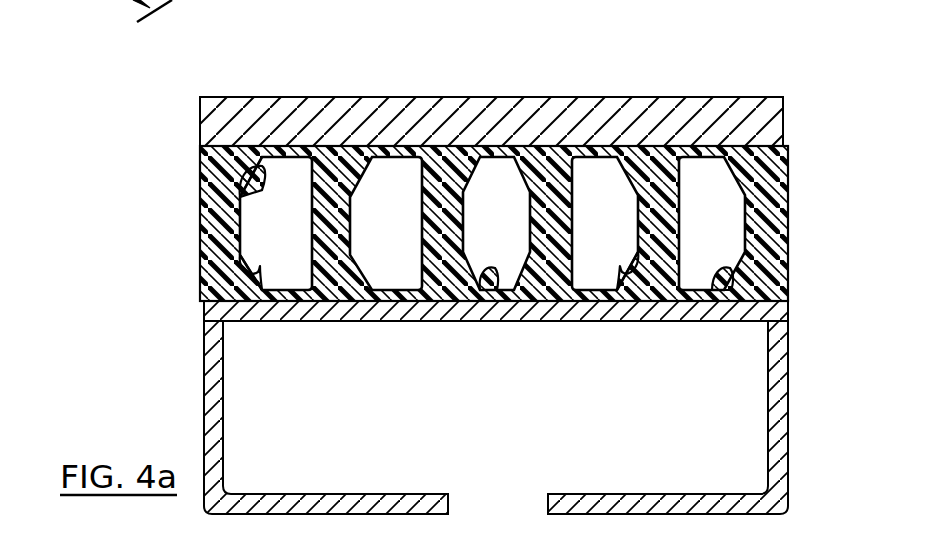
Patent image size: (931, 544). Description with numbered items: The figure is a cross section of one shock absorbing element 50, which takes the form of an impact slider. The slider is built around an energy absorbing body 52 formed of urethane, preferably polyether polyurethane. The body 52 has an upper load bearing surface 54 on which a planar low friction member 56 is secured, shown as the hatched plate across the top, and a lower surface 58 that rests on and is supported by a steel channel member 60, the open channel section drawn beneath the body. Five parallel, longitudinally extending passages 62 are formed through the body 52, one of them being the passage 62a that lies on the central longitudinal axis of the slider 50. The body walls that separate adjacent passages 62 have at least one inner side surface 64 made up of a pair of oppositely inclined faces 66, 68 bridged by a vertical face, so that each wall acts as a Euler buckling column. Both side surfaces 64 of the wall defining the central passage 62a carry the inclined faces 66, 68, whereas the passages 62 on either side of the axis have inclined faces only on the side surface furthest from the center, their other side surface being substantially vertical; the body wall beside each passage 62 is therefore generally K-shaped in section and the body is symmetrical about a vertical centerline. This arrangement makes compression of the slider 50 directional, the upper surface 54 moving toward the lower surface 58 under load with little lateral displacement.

The shock absorbing element 50 is at (372, 33).
The energy absorbing body 52 is at (200, 225).
The upper load bearing surface 54 is at (350, 147).
The planar low friction member 56 is at (200, 127).
The lower surface 58 is at (393, 305).
The steel channel member 60 is at (203, 400).
The passages 62 is at (280, 268).
The central passage 62a is at (497, 185).
The inner side surface 64 is at (298, 188).
The inclined face 66 is at (255, 186).
The inclined face 68 is at (258, 258).